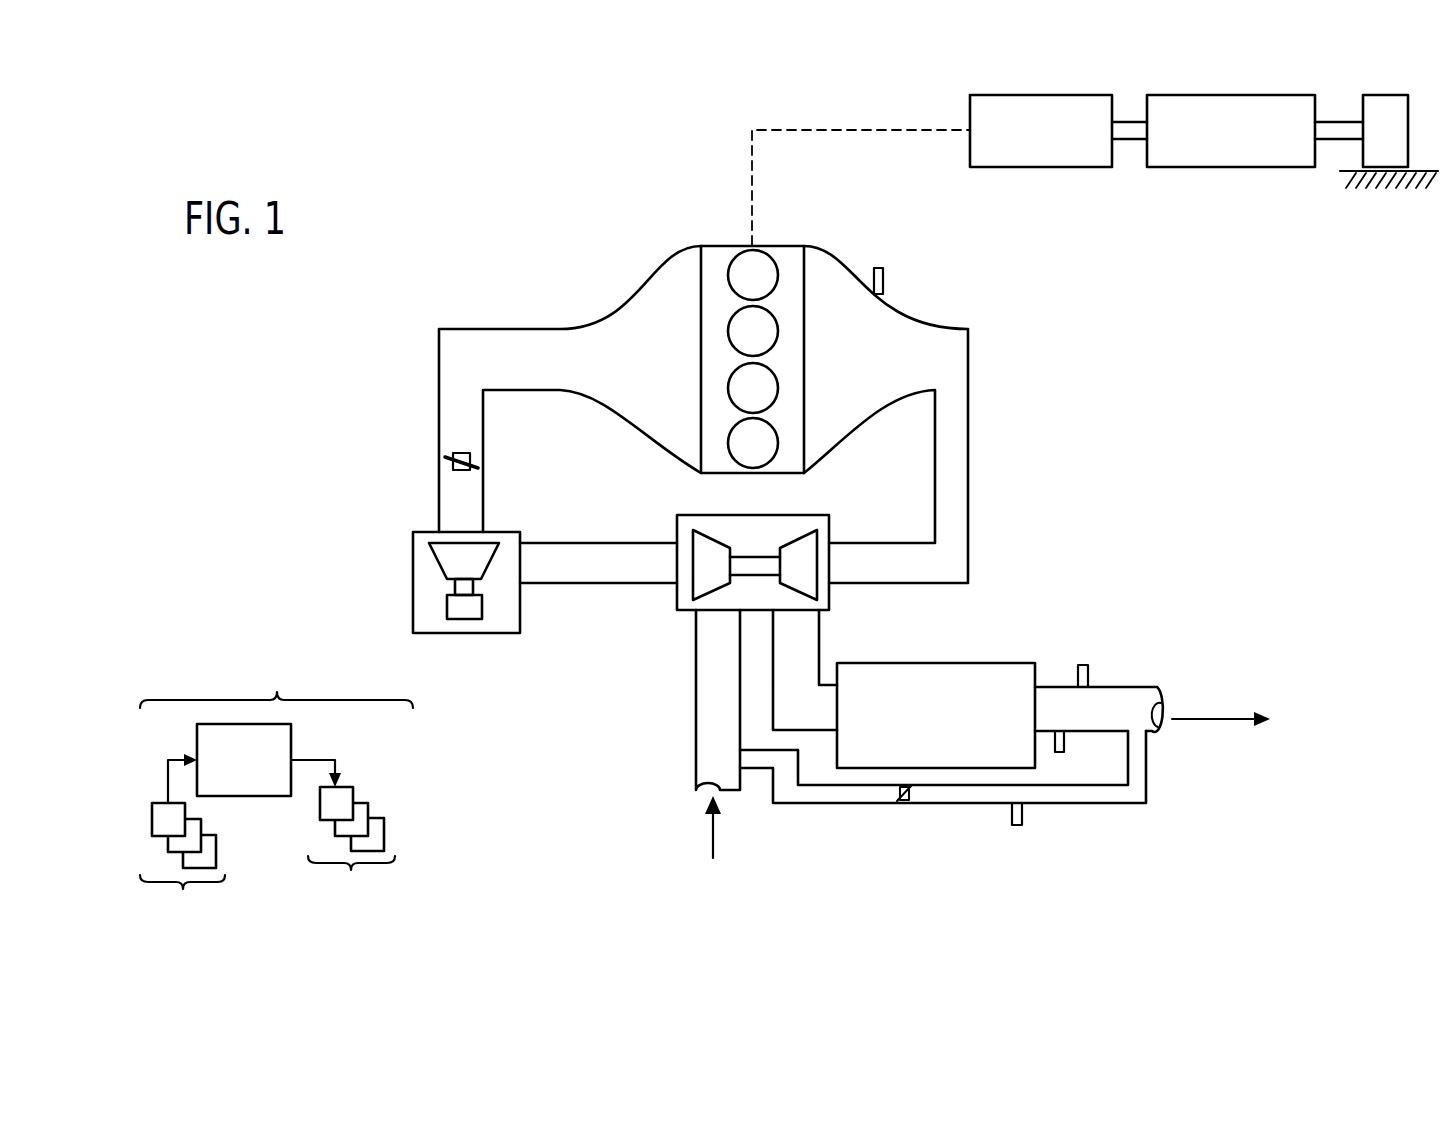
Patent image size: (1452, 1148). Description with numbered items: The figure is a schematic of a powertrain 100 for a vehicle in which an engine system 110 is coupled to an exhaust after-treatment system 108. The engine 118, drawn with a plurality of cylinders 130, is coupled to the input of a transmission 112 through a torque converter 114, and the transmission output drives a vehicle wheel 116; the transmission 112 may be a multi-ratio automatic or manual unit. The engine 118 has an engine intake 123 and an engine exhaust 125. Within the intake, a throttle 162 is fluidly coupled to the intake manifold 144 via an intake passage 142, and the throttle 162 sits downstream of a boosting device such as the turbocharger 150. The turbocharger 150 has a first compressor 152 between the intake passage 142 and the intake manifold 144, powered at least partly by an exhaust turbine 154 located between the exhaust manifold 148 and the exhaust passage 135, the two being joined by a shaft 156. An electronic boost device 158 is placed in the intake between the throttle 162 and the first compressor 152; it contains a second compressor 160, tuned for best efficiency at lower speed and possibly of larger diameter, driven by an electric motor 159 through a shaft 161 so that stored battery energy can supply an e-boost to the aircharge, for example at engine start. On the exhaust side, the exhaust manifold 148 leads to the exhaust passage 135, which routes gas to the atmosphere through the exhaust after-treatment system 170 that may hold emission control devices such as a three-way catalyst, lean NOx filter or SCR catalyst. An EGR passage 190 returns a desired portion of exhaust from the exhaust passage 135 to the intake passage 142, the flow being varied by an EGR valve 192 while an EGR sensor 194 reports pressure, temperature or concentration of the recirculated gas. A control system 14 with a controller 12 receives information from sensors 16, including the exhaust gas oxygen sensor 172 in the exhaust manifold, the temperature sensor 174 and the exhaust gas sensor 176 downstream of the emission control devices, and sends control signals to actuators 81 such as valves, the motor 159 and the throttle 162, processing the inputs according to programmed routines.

The powertrain 100 is at (1283, 496).
The exhaust after-treatment system 108 is at (1046, 598).
The engine system 110 is at (858, 213).
The transmission 112 is at (1225, 167).
The torque converter 114 is at (1058, 167).
The vehicle wheel 116 is at (1390, 95).
The engine 118 is at (804, 339).
The engine intake 123 is at (624, 689).
The engine exhaust 125 is at (1001, 468).
The cylinders 130 is at (774, 267).
The exhaust passage 135 is at (1110, 687).
The intake passage 142 is at (696, 730).
The intake manifold 144 is at (657, 374).
The exhaust manifold 148 is at (897, 374).
The turbocharger 150 is at (745, 515).
The first compressor 152 is at (693, 552).
The exhaust turbine 154 is at (817, 552).
The shaft 156 is at (773, 580).
The electronic boost device 158 is at (438, 528).
The motor 159 is at (447, 612).
The second compressor 160 is at (486, 545).
The shaft 161 is at (473, 585).
The throttle 162 is at (470, 459).
The exhaust after-treatment system 170 is at (933, 663).
The exhaust gas oxygen sensor 172 is at (884, 283).
The temperature sensor 174 is at (1083, 665).
The exhaust gas sensor 176 is at (1064, 744).
The EGR passage 190 is at (815, 805).
The EGR valve 192 is at (905, 800).
The EGR sensor 194 is at (1022, 818).
The controller 12 is at (254, 763).
The control system 14 is at (276, 674).
The sensors 16 is at (183, 870).
The actuators 81 is at (351, 853).